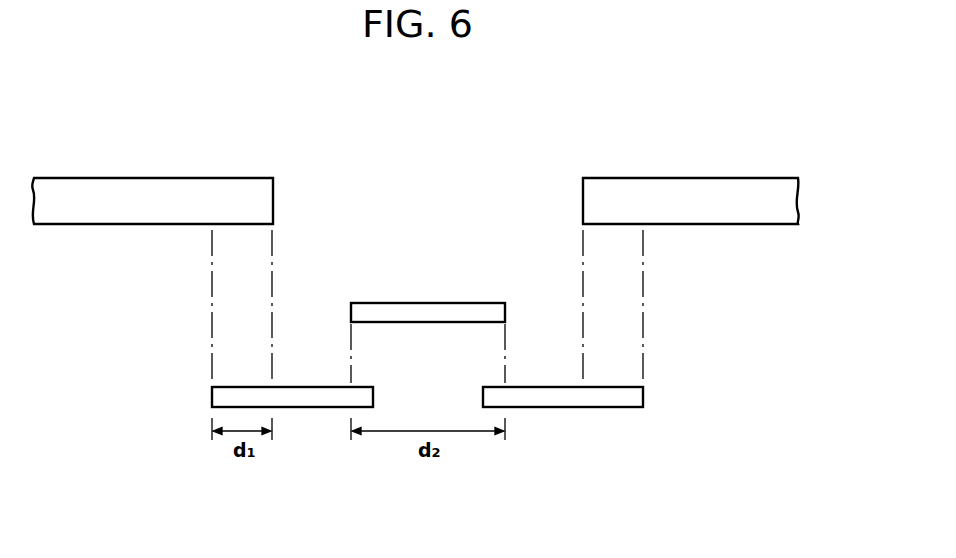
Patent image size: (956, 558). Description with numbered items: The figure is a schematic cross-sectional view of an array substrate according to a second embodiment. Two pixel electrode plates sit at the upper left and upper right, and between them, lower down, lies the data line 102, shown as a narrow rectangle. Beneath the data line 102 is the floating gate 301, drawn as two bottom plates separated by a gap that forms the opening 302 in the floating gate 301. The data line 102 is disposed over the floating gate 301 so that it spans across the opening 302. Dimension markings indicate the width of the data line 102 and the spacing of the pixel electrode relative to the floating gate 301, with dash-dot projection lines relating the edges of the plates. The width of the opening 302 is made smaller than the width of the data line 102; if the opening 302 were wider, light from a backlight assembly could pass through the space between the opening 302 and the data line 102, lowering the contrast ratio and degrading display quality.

The data line 102 is at (487, 305).
The floating gate 301 is at (617, 403).
The opening 302 is at (427, 396).